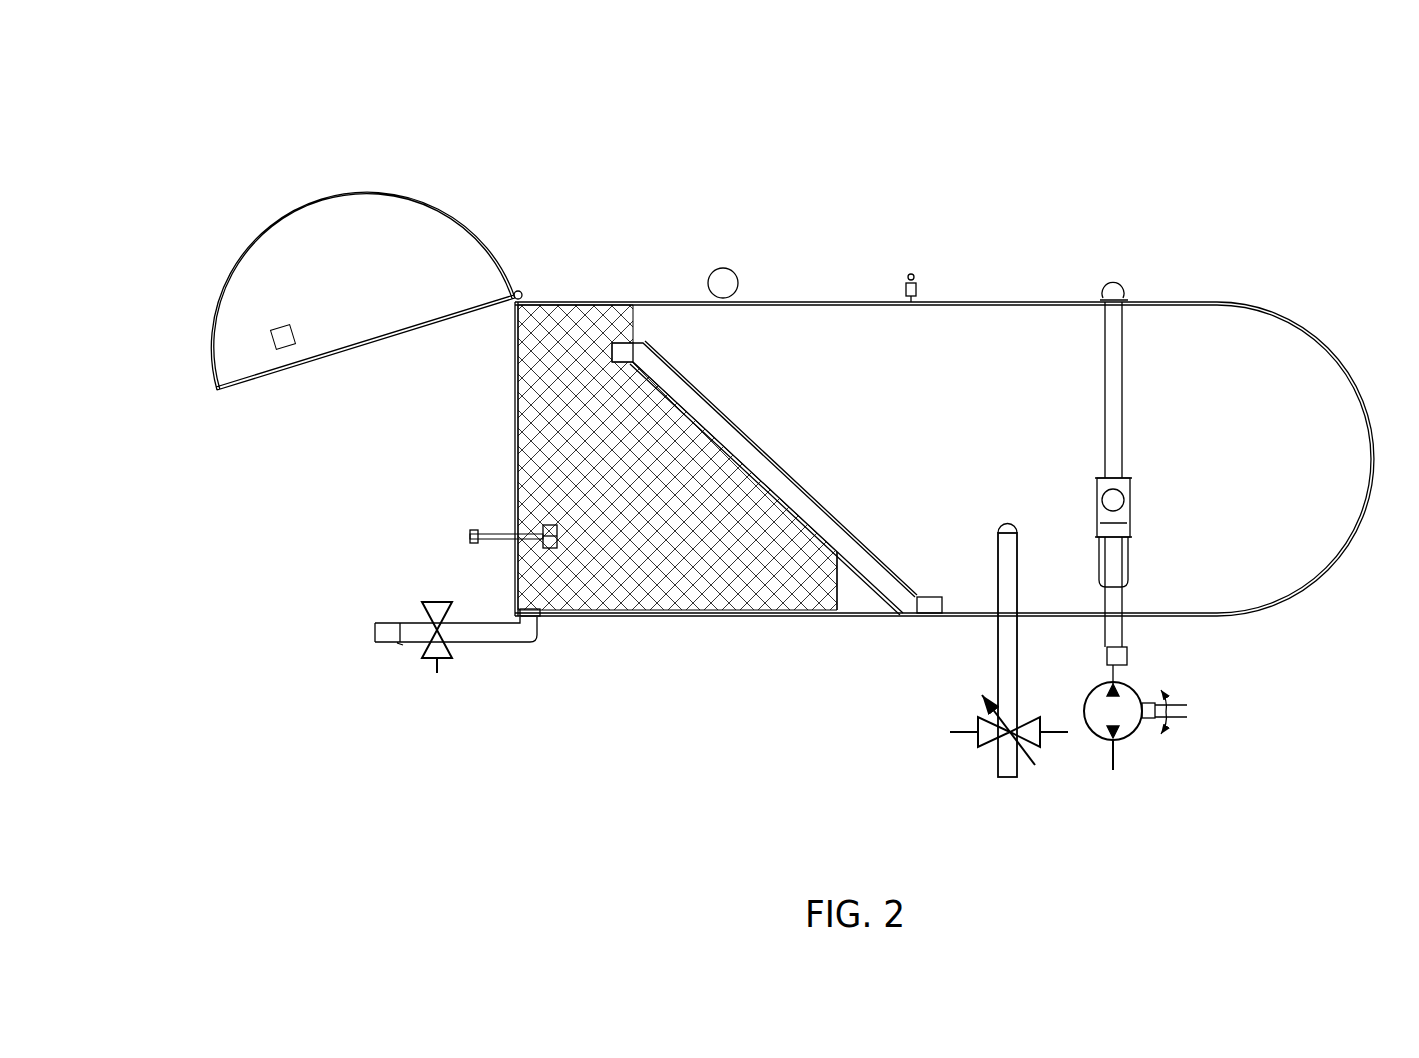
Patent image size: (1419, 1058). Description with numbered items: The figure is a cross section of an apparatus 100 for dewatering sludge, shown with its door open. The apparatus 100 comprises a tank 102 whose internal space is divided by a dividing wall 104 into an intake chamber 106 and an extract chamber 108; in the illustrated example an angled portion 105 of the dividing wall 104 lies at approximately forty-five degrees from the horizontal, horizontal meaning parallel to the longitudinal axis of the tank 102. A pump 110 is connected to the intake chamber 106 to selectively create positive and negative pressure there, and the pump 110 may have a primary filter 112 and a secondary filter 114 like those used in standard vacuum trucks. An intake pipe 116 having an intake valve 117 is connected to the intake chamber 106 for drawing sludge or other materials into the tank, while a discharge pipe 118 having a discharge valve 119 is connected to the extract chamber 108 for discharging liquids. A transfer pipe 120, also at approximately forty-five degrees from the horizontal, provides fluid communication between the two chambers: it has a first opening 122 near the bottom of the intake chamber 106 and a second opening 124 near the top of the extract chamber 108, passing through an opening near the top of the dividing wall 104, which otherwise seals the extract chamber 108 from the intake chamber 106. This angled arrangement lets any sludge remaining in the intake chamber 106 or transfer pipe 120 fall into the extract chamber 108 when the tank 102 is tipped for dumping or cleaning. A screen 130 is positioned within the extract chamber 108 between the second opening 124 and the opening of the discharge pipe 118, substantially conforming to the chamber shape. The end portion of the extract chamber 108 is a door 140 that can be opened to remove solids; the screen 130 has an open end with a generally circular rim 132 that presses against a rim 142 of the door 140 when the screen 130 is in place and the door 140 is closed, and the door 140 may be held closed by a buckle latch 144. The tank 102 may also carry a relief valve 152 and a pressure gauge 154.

The apparatus 100 is at (523, 168).
The tank 102 is at (1252, 305).
The dividing wall 104 is at (837, 553).
The angled portion 105 is at (712, 445).
The intake chamber 106 is at (1283, 445).
The extract chamber 108 is at (590, 390).
The pump 110 is at (1127, 737).
The primary filter 112 is at (1108, 278).
The secondary filter 114 is at (1113, 505).
The intake pipe 116 is at (998, 657).
The intake valve 117 is at (1038, 750).
The discharge pipe 118 is at (502, 630).
The discharge valve 119 is at (472, 603).
The transfer pipe 120 is at (825, 518).
The first opening 122 is at (938, 602).
The second opening 124 is at (620, 346).
The screen 130 is at (583, 452).
The rim 132 is at (513, 608).
The door 140 is at (240, 300).
The rim 142 is at (212, 387).
The buckle latch 144 is at (470, 536).
The relief valve 152 is at (917, 283).
The pressure gauge 154 is at (720, 290).